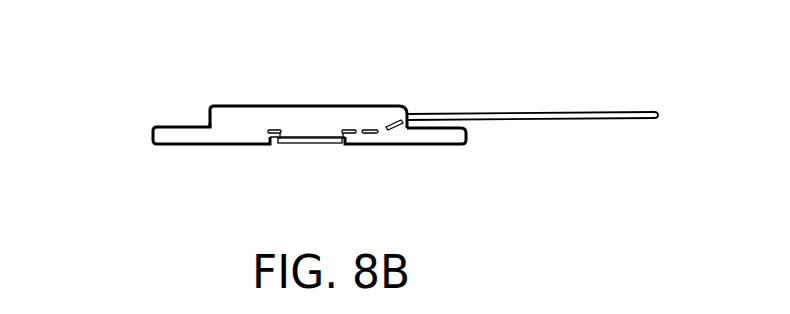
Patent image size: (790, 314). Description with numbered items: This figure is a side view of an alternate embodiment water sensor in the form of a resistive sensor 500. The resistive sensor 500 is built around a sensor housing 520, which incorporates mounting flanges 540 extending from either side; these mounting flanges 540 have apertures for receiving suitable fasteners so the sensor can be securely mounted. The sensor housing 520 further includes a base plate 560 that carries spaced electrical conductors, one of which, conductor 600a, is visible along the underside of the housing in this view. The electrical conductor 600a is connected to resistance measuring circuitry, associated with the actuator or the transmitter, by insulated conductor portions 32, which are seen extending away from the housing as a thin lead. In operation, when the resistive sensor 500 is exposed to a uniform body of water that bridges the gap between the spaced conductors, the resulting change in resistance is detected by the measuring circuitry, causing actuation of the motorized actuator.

The resistive sensor 500 is at (205, 41).
The sensor housing 520 is at (370, 103).
The mounting flanges 540 is at (152, 128).
The base plate 560 is at (268, 143).
The spaced electrical conductor 600a is at (315, 143).
The insulated conductor portions 32 is at (618, 113).